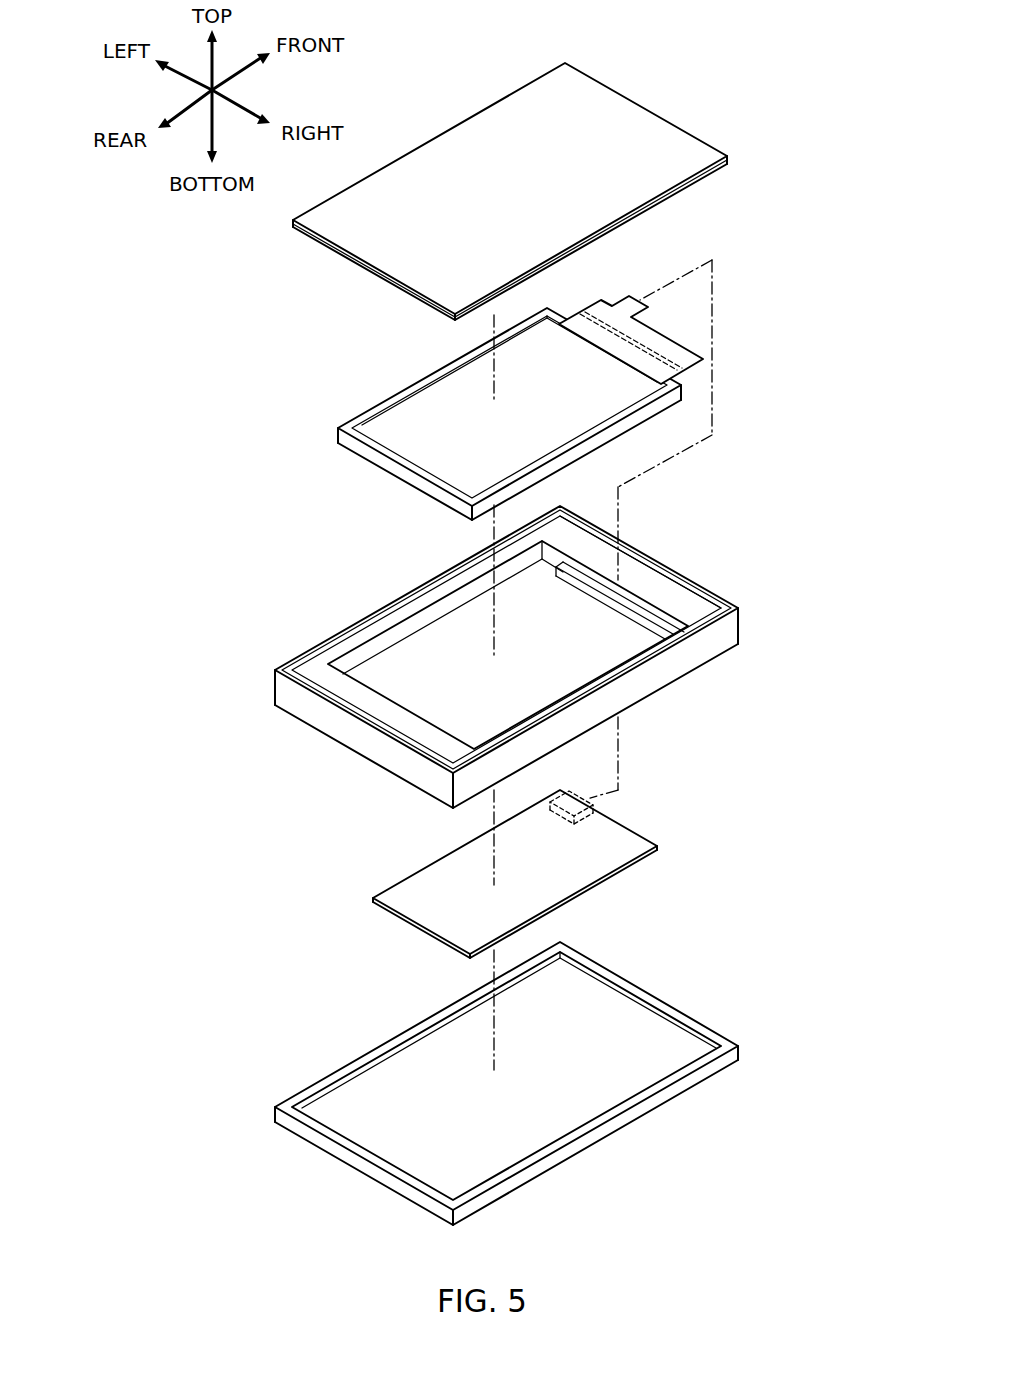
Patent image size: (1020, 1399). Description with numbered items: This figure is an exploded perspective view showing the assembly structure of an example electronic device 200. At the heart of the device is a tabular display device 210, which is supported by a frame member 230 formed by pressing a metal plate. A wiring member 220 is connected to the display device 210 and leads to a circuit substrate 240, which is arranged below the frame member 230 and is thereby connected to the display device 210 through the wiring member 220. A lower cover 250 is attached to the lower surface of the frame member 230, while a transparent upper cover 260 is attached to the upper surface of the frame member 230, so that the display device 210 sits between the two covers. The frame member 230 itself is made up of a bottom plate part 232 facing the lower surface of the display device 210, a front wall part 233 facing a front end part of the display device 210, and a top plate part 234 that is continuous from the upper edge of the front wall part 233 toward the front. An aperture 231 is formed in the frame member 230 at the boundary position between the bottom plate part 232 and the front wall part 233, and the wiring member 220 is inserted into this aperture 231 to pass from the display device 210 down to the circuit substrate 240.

The electronic device 200 is at (740, 99).
The display device 210 is at (337, 429).
The wiring member 220 is at (657, 343).
The frame member 230 is at (483, 650).
The aperture 231 is at (648, 606).
The bottom plate part 232 is at (405, 653).
The front wall part 233 is at (677, 603).
The top plate part 234 is at (707, 588).
The circuit substrate 240 is at (408, 892).
The lower cover 250 is at (275, 1112).
The upper cover 260 is at (509, 122).